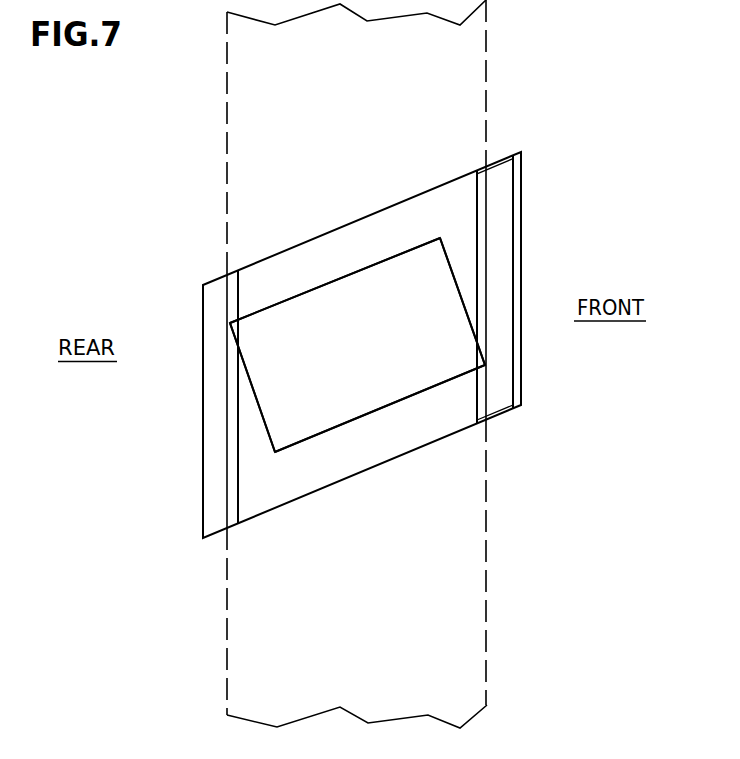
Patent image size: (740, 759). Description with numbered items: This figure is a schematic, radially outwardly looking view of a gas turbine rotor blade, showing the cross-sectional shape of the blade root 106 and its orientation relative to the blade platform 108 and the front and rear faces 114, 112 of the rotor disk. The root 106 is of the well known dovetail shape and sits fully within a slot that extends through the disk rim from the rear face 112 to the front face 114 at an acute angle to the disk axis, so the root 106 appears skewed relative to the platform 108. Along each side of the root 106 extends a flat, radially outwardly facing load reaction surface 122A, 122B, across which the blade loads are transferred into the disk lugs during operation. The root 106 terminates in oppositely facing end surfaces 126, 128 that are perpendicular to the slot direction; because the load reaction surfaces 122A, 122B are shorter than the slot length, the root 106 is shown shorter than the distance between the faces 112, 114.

The root 106 is at (387, 364).
The platform 108 is at (522, 182).
The rear face 112 is at (227, 95).
The front face 114 is at (486, 80).
The load reaction surface 122A is at (420, 395).
The load reaction surface 122B is at (285, 293).
The end surface 126 is at (254, 393).
The end surface 128 is at (458, 287).